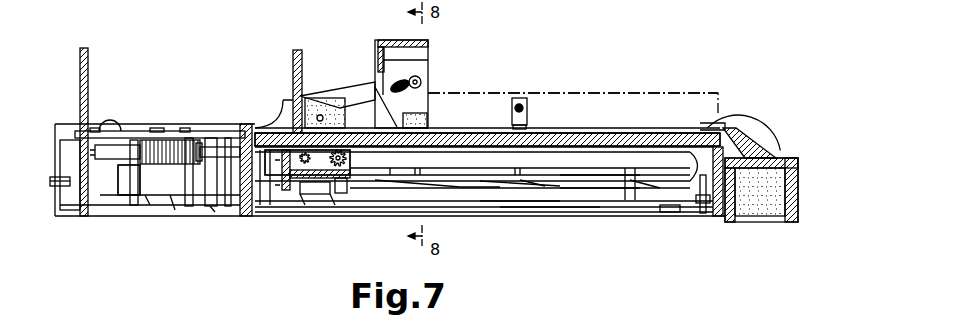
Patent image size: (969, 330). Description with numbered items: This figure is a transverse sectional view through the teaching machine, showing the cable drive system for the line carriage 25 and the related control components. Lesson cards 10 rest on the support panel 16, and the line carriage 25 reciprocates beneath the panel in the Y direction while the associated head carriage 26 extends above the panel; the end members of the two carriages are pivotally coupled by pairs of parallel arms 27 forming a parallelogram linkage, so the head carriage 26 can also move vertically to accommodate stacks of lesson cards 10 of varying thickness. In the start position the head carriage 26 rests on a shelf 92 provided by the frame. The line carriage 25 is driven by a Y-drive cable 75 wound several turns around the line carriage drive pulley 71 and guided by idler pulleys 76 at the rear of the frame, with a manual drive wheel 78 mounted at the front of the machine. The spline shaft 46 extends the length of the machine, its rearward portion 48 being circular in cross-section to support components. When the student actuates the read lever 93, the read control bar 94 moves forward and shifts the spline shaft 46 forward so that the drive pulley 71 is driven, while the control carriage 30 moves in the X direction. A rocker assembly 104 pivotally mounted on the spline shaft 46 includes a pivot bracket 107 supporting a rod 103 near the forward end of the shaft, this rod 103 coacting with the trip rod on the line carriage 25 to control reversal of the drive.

The rearward portion 48 is at (60, 179).
The idler pulleys 76 is at (110, 122).
The line carriage drive pulley 71 is at (105, 200).
The head carriage 26 is at (383, 42).
The parallel arms 27 is at (365, 87).
The read lever 93 is at (526, 101).
The support panel 16 is at (602, 143).
The lesson cards 10 is at (662, 112).
The manual drive wheel 78 is at (745, 127).
The shelf 92 is at (797, 160).
The line carriage 25 is at (295, 197).
The control carriage 30 is at (347, 177).
The rocker assembly 104 is at (513, 210).
The rod 103 is at (549, 207).
The spline shaft 46 is at (596, 190).
The read control bar 94 is at (620, 177).
The Y-drive cable 75 is at (677, 213).
The pivot bracket 107 is at (702, 217).